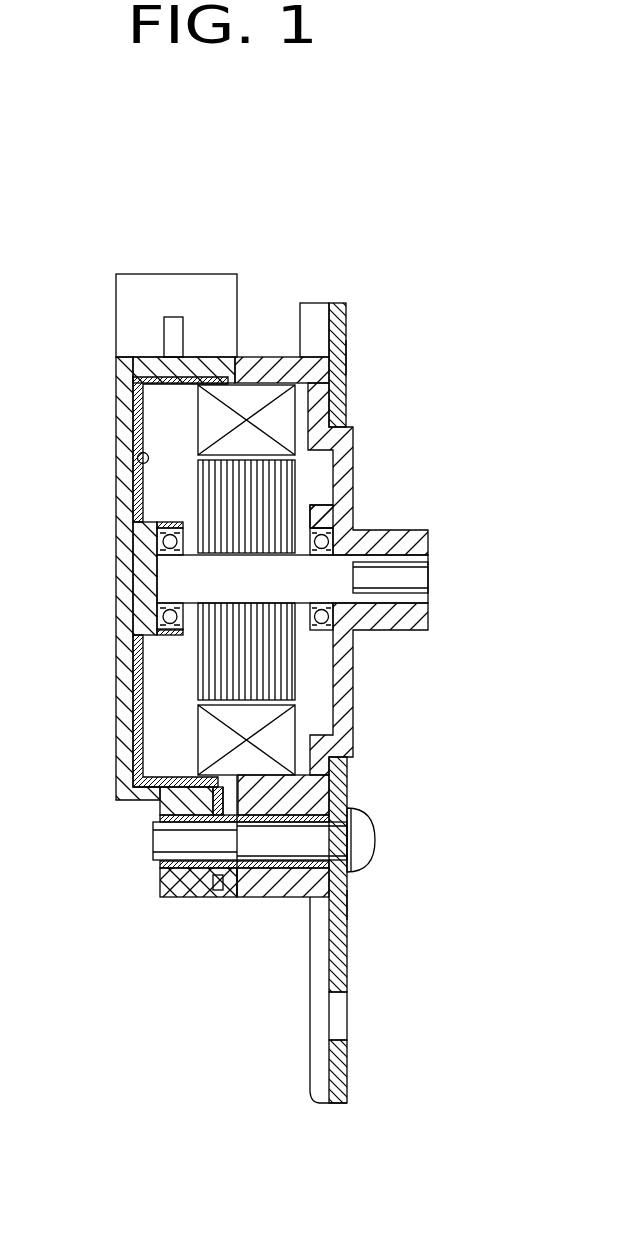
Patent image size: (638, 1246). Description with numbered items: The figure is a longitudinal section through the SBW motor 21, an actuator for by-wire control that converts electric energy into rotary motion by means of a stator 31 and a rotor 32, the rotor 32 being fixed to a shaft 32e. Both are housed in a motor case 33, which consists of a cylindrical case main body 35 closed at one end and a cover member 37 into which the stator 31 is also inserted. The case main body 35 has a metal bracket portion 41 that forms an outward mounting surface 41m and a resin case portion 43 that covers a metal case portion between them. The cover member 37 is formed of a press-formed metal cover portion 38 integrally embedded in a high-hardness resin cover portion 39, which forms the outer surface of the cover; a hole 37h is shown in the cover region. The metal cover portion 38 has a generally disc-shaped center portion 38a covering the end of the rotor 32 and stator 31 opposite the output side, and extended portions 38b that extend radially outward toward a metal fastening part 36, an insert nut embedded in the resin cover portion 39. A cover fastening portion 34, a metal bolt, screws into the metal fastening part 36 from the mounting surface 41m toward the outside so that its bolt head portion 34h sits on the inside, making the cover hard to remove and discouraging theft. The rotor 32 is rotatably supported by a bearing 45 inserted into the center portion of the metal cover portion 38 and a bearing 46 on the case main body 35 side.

The SBW motor 21 is at (300, 220).
The stator 31 is at (270, 407).
The rotor 32 is at (283, 483).
The shaft 32e is at (347, 595).
The motor case 33 is at (273, 344).
The cover fastening portion 34 is at (308, 843).
The bolt head portion 34h is at (360, 840).
The case main body 35 is at (268, 885).
The metal fastening part 36 is at (160, 862).
The cover member 37 is at (127, 792).
The cover hole 37h is at (139, 311).
The metal cover portion 38 is at (133, 728).
The center portion 38a is at (138, 458).
The extended portions 38b is at (215, 880).
The resin cover portion 39 is at (139, 600).
The metal bracket portion 41 is at (316, 308).
The mounting surface 41m is at (347, 358).
The resin case portion 43 is at (348, 710).
The bearing 45 is at (139, 552).
The bearing 46 is at (328, 523).